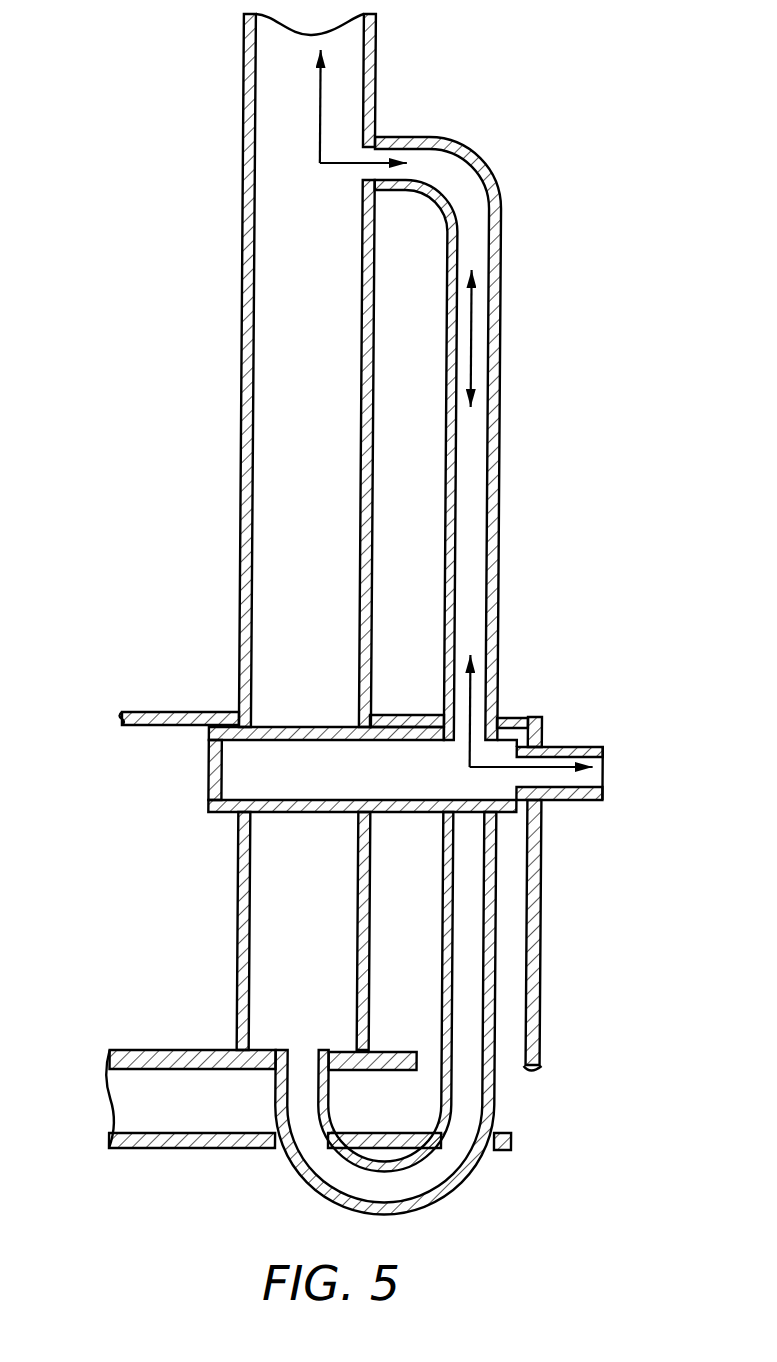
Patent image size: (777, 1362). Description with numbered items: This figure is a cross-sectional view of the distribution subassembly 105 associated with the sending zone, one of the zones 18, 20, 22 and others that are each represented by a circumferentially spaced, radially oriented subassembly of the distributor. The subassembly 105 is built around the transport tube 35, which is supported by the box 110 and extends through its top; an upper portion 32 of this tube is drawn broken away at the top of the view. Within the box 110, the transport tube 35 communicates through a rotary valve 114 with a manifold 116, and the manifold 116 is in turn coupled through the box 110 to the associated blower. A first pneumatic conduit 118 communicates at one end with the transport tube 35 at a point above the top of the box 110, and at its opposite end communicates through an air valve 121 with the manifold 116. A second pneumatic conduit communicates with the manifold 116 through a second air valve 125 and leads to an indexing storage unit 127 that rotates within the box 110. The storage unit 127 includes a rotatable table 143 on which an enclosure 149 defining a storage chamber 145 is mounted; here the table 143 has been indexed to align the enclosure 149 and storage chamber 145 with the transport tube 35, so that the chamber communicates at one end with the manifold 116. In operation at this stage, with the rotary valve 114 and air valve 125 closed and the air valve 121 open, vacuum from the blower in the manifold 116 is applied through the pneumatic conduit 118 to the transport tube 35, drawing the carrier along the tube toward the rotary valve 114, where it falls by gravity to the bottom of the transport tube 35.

The subassembly 105 is at (398, 103).
The central passage 32 is at (286, 247).
The transport tube 35 is at (247, 320).
The first pneumatic conduit 118 is at (503, 254).
The zone 18 is at (478, 338).
The zone 20 is at (265, 765).
The rotary valve 114 is at (300, 727).
The air valve 121 is at (489, 740).
The zone 22 is at (478, 755).
The manifold 116 is at (224, 775).
The indexing storage unit 127 is at (128, 913).
The enclosure 149 is at (244, 893).
The storage chamber 145 is at (284, 965).
The air valve 125 is at (476, 812).
The table 143 is at (208, 1068).
The box 110 is at (512, 1157).